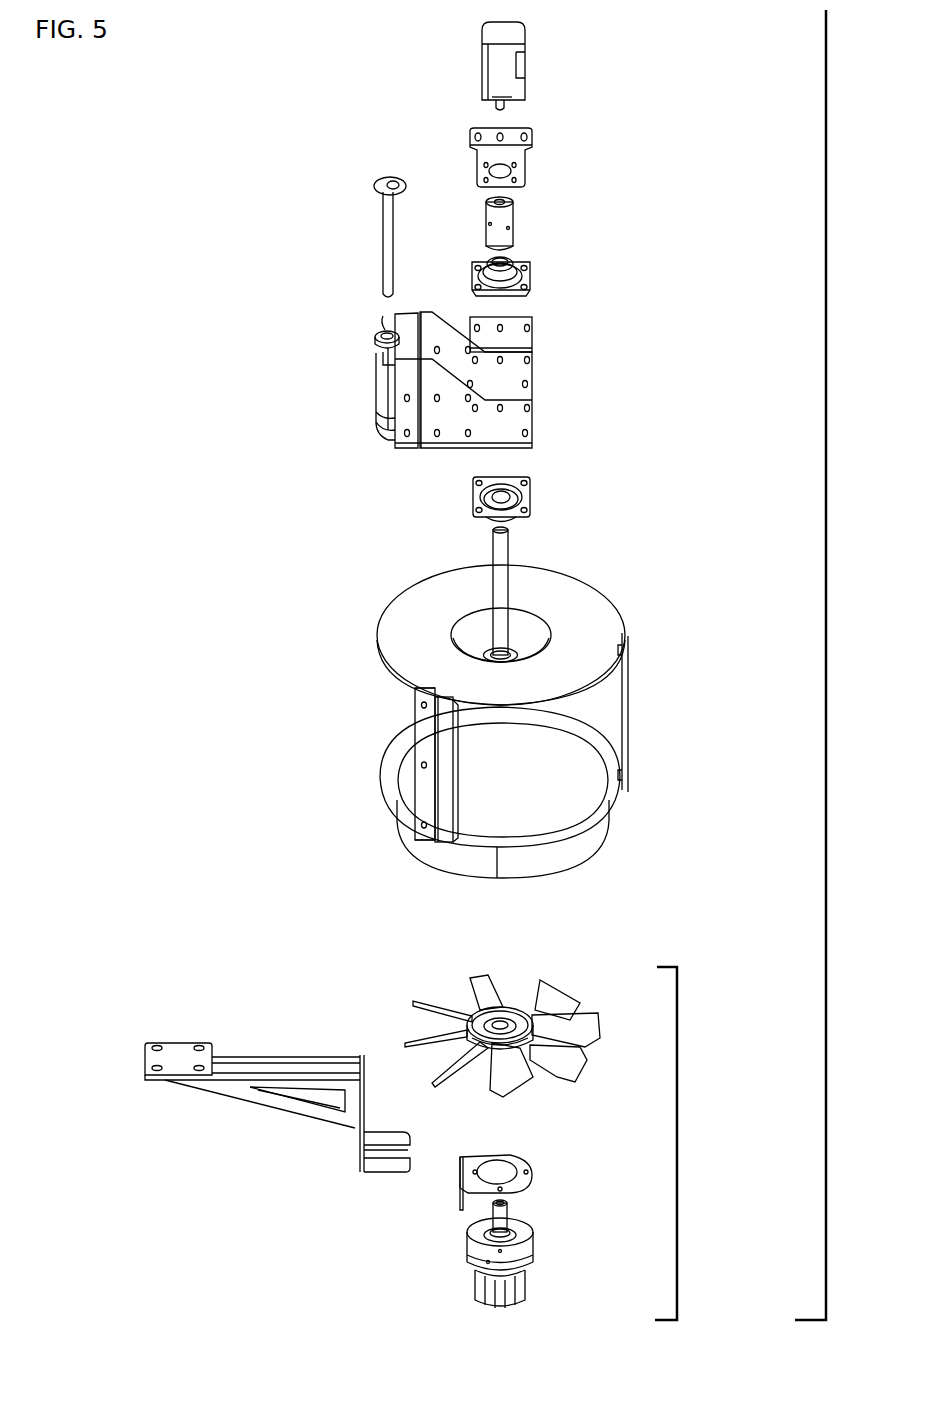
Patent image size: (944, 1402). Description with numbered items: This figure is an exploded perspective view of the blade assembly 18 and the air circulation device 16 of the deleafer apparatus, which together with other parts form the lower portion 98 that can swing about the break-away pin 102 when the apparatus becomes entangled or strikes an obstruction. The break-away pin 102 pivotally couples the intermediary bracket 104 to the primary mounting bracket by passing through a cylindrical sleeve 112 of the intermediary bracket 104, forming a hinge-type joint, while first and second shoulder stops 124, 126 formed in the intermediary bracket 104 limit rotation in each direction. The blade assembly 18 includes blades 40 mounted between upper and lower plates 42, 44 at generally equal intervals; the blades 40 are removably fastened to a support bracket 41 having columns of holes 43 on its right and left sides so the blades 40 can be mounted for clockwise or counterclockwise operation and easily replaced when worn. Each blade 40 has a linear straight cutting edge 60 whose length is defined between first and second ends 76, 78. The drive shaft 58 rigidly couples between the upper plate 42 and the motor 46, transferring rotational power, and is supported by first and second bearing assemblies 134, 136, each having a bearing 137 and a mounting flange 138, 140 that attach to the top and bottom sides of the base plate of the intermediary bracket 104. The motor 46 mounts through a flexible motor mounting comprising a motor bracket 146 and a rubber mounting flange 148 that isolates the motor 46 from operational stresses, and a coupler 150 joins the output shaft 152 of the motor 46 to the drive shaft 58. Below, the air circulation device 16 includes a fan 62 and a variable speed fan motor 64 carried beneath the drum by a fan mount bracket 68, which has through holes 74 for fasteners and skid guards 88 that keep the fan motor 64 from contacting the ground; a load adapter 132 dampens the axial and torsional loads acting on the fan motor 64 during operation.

The air circulation device 16 is at (677, 1120).
The blade assembly 18 is at (672, 599).
The blades 40 is at (438, 575).
The support bracket 41 is at (447, 744).
The upper plate 42 is at (572, 598).
The holes 43 is at (445, 710).
The lower plate 44 is at (565, 857).
The motor 46 is at (513, 84).
The drive shaft 58 is at (508, 572).
The cutting edge 60 is at (414, 720).
The fan 62 is at (576, 1030).
The fan motor 64 is at (508, 1292).
The fan mount bracket 68 is at (291, 1067).
The through holes 74 is at (157, 1046).
The first end 76 is at (418, 692).
The second end 78 is at (420, 828).
The skid guards 88 is at (408, 1162).
The lower portion 98 is at (826, 681).
The break-away pin 102 is at (383, 252).
The intermediary bracket 104 is at (512, 373).
The cylindrical sleeve 112 is at (384, 398).
The first shoulder stop 124 is at (395, 360).
The second shoulder stop 126 is at (392, 318).
The load adapter 132 is at (528, 1232).
The first bearing assembly 134 is at (545, 258).
The second bearing assembly 136 is at (552, 472).
The bearing 137 is at (492, 265).
The mounting flange 138 is at (528, 281).
The mounting flange 140 is at (530, 495).
The motor bracket 146 is at (523, 153).
The mounting flange 148 is at (520, 337).
The coupler 150 is at (512, 224).
The output shaft 152 is at (496, 107).